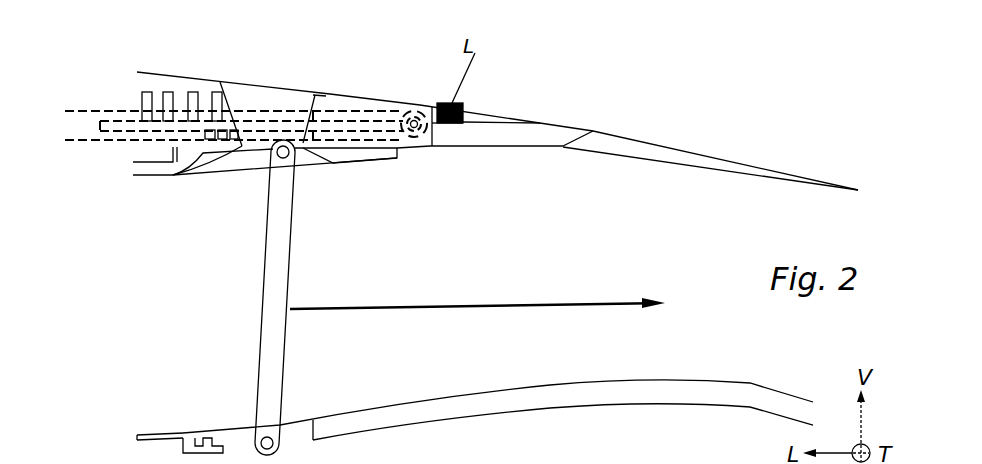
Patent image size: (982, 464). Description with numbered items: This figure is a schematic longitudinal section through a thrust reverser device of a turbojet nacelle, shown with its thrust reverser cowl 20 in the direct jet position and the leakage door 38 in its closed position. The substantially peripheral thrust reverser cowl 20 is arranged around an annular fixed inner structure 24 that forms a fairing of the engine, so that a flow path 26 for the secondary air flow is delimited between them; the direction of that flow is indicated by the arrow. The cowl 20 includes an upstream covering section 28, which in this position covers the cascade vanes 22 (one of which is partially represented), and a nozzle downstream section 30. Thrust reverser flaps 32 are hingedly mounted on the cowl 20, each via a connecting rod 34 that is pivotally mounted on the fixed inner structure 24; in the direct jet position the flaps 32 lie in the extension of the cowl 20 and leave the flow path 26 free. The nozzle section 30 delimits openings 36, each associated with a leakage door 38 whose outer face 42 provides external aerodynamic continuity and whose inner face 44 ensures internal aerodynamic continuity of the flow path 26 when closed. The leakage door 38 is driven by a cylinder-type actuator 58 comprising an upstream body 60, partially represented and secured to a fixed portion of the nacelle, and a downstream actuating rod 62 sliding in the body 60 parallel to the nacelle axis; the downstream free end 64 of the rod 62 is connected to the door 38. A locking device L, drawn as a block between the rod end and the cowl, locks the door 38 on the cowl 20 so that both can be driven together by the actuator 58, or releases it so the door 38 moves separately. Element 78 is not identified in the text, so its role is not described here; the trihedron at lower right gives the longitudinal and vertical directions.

The thrust reverser cowl 20 is at (503, 75).
The cascade vanes 22 is at (143, 97).
The fixed inner structure 24 is at (500, 390).
The flow path 26 is at (622, 270).
The upstream covering section 28 is at (236, 58).
The nozzle downstream section 30 is at (664, 125).
The thrust reverser flaps 32 is at (243, 163).
The connecting rod 34 is at (290, 286).
The openings 36 is at (562, 91).
The leakage door 38 is at (552, 168).
The outer face 42 is at (567, 123).
The inner face 44 is at (518, 150).
The actuator 58 is at (104, 156).
The upstream body 60 is at (107, 110).
The actuating rod 62 is at (362, 131).
The downstream free end 64 is at (433, 102).
The slat 78 is at (160, 43).